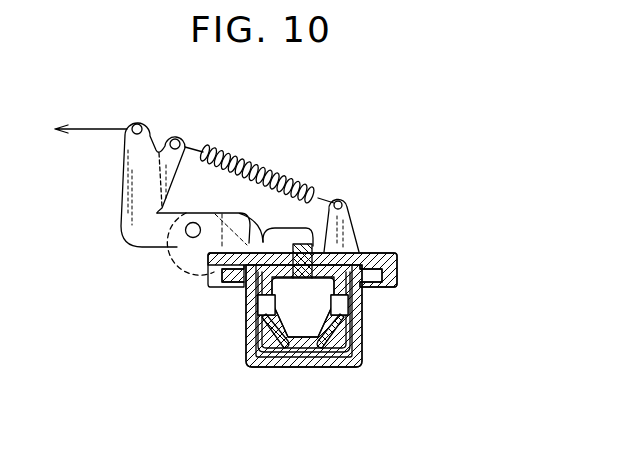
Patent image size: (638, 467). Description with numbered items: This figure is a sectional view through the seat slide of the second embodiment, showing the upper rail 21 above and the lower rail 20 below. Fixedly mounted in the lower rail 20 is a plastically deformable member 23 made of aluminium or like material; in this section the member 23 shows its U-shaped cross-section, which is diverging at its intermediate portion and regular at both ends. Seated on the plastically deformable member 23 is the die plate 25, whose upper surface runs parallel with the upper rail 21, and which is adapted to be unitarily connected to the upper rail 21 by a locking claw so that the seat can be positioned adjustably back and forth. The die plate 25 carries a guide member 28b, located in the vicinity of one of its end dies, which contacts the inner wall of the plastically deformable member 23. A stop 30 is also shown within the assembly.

The lower rail 20 is at (363, 355).
The upper rail 21 is at (402, 262).
The plastically deformable member 23 is at (250, 350).
The die plate 25 is at (365, 250).
The guide member 28b is at (352, 313).
The stop 30 is at (267, 303).